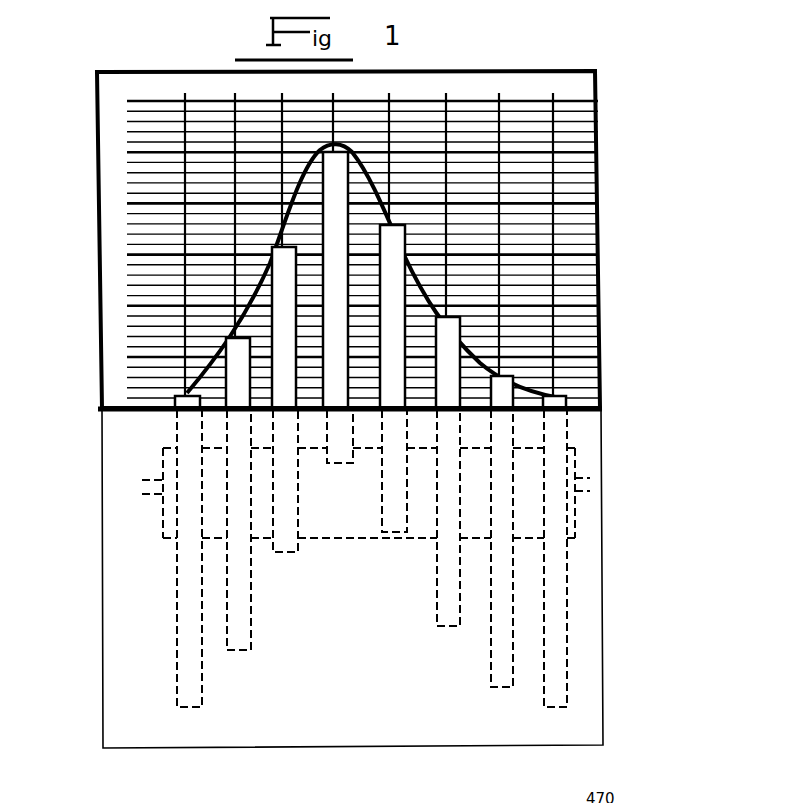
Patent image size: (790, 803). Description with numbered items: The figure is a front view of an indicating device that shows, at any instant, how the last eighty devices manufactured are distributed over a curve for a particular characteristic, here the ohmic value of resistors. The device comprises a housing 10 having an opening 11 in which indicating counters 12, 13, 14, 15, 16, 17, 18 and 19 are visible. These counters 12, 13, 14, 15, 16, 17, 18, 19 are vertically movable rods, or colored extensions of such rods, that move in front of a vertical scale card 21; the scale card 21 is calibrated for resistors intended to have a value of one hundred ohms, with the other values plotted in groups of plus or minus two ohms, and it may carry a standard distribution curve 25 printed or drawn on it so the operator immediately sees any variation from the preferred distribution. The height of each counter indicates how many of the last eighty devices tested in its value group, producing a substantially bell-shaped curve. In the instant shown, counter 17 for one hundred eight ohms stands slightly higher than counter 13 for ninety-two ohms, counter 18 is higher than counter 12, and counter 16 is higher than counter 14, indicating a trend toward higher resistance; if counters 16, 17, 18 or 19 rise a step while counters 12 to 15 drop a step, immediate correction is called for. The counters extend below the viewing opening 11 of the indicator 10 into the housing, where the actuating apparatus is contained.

The housing 10 is at (611, 539).
The opening 11 is at (582, 82).
The vertical scale card 21 is at (573, 91).
The standard distribution curve 25 is at (393, 297).
The indicating counter 12 is at (187, 405).
The indicating counter 13 is at (243, 359).
The indicating counter 14 is at (283, 271).
The indicating counter 15 is at (338, 183).
The indicating counter 16 is at (403, 291).
The indicating counter 17 is at (447, 323).
The indicating counter 18 is at (503, 377).
The indicating counter 19 is at (557, 402).